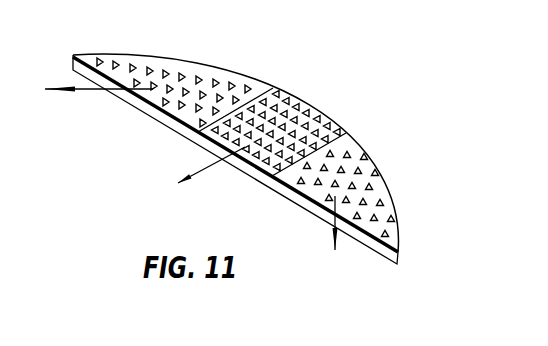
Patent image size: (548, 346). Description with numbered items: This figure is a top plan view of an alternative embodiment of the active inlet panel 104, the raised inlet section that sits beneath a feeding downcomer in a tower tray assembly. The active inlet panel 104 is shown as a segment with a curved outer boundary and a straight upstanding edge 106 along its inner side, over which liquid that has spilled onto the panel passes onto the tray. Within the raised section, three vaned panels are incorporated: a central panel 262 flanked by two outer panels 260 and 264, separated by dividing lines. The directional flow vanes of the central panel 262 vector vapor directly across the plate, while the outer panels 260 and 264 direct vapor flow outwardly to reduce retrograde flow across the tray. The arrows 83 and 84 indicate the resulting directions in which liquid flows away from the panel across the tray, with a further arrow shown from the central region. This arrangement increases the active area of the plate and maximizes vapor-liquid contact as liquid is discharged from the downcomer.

The active inlet panel 104 is at (141, 48).
The upstanding edge 106 is at (257, 172).
The outer panel 260 is at (152, 78).
The central panel 262 is at (287, 119).
The outer panel 264 is at (371, 199).
The arrow 83 is at (88, 92).
The arrow 84 is at (330, 222).